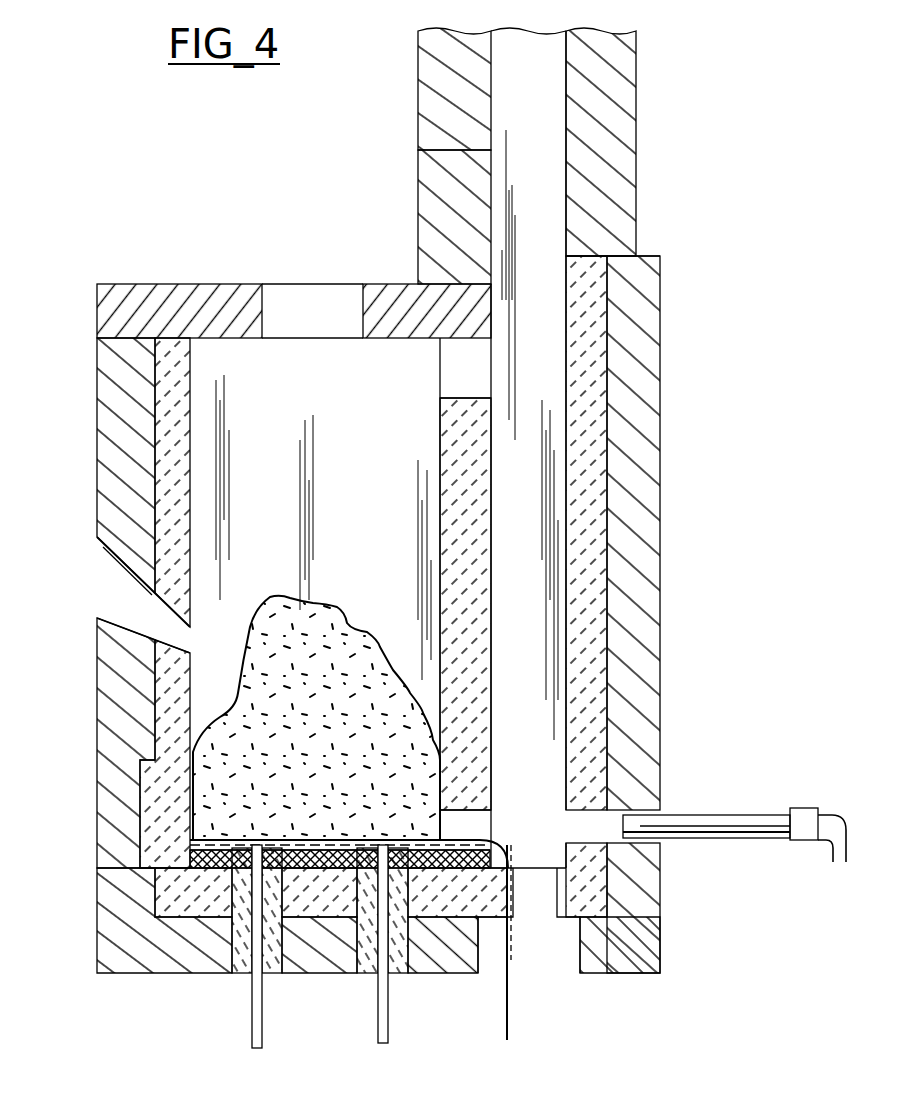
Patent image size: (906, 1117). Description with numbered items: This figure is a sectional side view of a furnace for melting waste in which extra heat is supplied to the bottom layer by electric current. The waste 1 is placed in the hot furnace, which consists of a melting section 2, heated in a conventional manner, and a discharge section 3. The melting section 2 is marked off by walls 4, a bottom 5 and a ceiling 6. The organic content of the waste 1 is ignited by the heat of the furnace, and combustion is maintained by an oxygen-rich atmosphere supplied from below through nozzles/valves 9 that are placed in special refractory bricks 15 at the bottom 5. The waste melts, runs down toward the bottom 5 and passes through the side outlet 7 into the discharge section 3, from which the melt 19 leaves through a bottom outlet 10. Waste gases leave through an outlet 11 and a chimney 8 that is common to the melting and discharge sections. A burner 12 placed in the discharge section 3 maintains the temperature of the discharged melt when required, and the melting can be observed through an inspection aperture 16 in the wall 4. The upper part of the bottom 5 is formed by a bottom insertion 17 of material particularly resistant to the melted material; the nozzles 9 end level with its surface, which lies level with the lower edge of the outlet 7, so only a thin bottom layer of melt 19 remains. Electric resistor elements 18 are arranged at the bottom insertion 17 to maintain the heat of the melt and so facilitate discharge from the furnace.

The waste 1 is at (325, 648).
The melting section 2 is at (288, 443).
The discharge section 3 is at (540, 527).
The walls 4 is at (122, 490).
The bottom 5 is at (192, 882).
The ceiling 6 is at (200, 306).
The side outlet 7 is at (478, 828).
The chimney 8 is at (547, 142).
The nozzles/valves 9 is at (262, 1025).
The bottom outlet 10 is at (543, 893).
The outlet 11 is at (475, 368).
The burner 12 is at (715, 822).
The refractory bricks 15 is at (242, 920).
The inspection aperture 16 is at (125, 598).
The bottom insertion 17 is at (205, 838).
The electric resistor elements 18 is at (192, 857).
The melt 19 is at (245, 838).